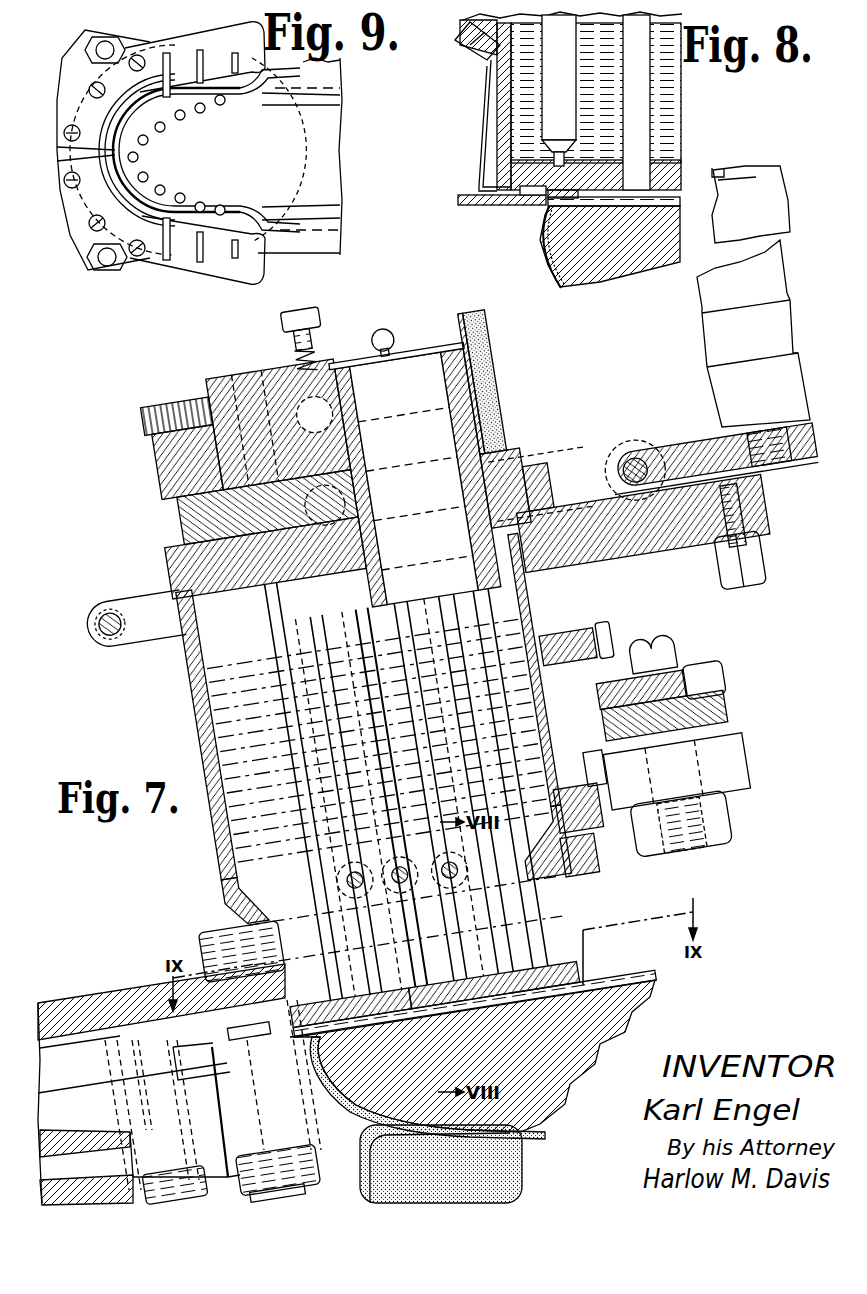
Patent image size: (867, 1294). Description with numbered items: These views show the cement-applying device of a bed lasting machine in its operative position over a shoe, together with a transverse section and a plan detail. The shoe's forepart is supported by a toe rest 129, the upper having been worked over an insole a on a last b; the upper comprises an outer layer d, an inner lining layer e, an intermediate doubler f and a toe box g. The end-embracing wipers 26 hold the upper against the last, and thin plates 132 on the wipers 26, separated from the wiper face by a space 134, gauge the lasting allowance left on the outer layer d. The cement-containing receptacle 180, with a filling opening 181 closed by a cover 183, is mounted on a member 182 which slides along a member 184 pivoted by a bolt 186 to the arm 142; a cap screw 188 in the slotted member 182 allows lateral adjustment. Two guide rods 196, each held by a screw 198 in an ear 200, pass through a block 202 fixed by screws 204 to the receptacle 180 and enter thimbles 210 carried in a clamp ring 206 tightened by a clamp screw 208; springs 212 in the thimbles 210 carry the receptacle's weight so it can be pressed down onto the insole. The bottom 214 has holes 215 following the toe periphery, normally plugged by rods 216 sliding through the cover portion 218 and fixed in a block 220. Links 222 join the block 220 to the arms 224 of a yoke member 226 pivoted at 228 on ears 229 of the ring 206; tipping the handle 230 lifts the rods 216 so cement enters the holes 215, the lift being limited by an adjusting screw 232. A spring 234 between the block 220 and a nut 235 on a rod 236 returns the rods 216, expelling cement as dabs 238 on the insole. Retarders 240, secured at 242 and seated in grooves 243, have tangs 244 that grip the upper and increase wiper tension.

In FIG. 9, the end-embracing wipers 26 is at (248, 38).
In FIG. 7, the end-embracing wipers 26 is at (291, 1040).
In FIG. 7, the toe rest 129 is at (522, 1193).
In FIG. 9, the thin plates 132 is at (125, 80).
In FIG. 7, the thin plates 132 is at (232, 1040).
In FIG. 7, the space 134 is at (258, 1040).
In FIG. 7, the arm 142 is at (745, 773).
In FIG. 8, the cement-containing receptacle 180 is at (497, 124).
In FIG. 7, the cement-containing receptacle 180 is at (190, 712).
In FIG. 7, the filling opening 181 is at (417, 365).
In FIG. 7, the member 182 is at (706, 680).
In FIG. 7, the cover 183 is at (398, 361).
In FIG. 7, the member 184 is at (724, 718).
In FIG. 7, the bolt 186 is at (700, 858).
In FIG. 7, the cap screw 188 is at (667, 651).
In FIG. 7, the guide rods 196 is at (553, 584).
In FIG. 7, the screw 198 is at (614, 632).
In FIG. 7, the ear 200 is at (556, 642).
In FIG. 7, the block 202 is at (600, 832).
In FIG. 7, the screws 204 is at (605, 779).
In FIG. 7, the clamp ring 206 is at (146, 598).
In FIG. 7, the clamp screw 208 is at (98, 626).
In FIG. 7, the thimbles 210 is at (535, 447).
In FIG. 7, the springs 212 is at (520, 388).
In FIG. 8, the bottom 214 is at (478, 207).
In FIG. 7, the bottom 214 is at (548, 958).
In FIG. 8, the holes 215 is at (575, 195).
In FIG. 7, the holes 215 is at (486, 980).
In FIG. 7, the rods 216 is at (406, 668).
In FIG. 7, the cover portion 218 is at (163, 548).
In FIG. 7, the block 220 is at (262, 408).
In FIG. 7, the link 222 is at (235, 512).
In FIG. 7, the arms 224 is at (546, 457).
In FIG. 7, the yoke member 226 is at (682, 457).
In FIG. 7, the pivot 228 is at (626, 447).
In FIG. 7, the ears 229 is at (700, 480).
In FIG. 8, the handle 230 is at (775, 255).
In FIG. 7, the adjusting screw 232 is at (766, 570).
In FIG. 7, the spring 234 is at (298, 353).
In FIG. 7, the nut 235 is at (288, 330).
In FIG. 7, the rod 236 is at (366, 655).
In FIG. 9, the dabs of cement 238 is at (165, 130).
In FIG. 9, the retarders 240 is at (200, 266).
In FIG. 8, the retarders 240 is at (480, 174).
In FIG. 7, the retarders 240 is at (462, 921).
In FIG. 8, the securing point 242 is at (470, 57).
In FIG. 8, the grooves 243 is at (548, 190).
In FIG. 8, the tangs 244 is at (523, 193).
In FIG. 8, the insole a is at (680, 199).
In FIG. 7, the insole a is at (656, 982).
In FIG. 8, the last b is at (575, 270).
In FIG. 7, the last b is at (632, 1016).
In FIG. 8, the outer layer d is at (536, 230).
In FIG. 7, the outer layer d is at (548, 1145).
In FIG. 8, the inner layer (lining) e is at (553, 278).
In FIG. 7, the inner layer (lining) e is at (545, 1135).
In FIG. 8, the intermediate layer (doubler) f is at (541, 247).
In FIG. 7, the intermediate layer (doubler) f is at (547, 1140).
In FIG. 8, the toe box g is at (546, 263).